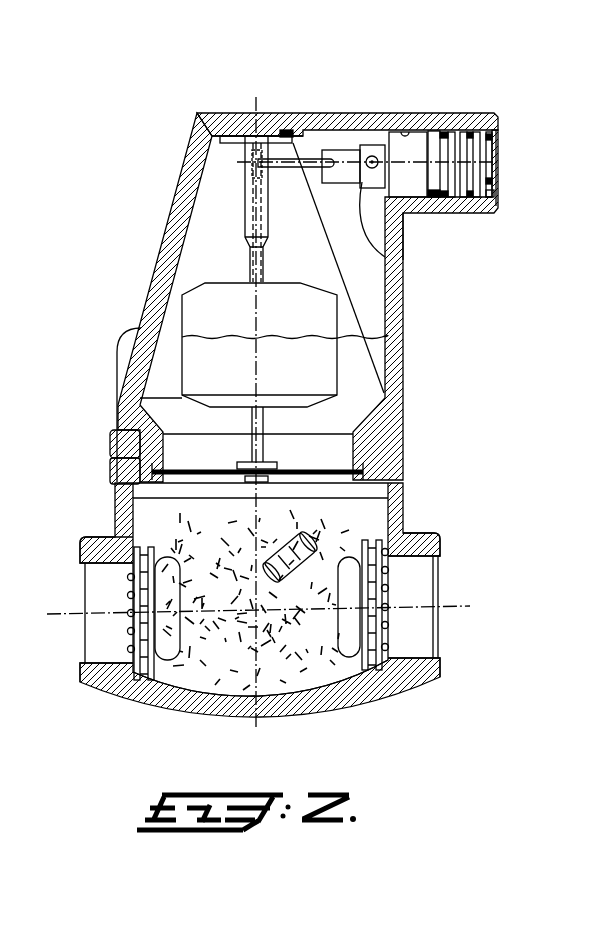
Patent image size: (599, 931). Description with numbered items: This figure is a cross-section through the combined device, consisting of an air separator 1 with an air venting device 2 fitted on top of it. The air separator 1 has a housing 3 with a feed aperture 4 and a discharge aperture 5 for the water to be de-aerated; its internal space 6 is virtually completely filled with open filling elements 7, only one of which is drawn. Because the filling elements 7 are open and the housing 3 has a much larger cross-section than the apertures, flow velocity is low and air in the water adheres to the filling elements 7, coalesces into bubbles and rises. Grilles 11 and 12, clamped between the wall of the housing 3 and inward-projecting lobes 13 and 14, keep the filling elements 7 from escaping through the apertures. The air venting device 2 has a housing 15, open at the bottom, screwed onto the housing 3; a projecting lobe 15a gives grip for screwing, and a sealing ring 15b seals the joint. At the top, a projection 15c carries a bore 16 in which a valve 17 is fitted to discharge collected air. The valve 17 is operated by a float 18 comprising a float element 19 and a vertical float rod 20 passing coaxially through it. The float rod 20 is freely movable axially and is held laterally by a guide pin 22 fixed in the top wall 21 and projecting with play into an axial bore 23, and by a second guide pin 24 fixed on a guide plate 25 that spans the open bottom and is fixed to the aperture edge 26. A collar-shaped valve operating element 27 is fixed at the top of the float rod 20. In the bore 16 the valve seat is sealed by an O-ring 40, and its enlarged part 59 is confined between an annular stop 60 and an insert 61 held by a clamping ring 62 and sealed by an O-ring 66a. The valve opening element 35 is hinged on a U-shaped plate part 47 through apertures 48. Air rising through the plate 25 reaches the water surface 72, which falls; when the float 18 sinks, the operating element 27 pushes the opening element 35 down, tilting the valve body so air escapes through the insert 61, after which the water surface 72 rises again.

The air separator 1 is at (477, 502).
The air venting device 2 is at (483, 301).
The housing 3 is at (155, 705).
The feed aperture 4 is at (100, 635).
The discharge aperture 5 is at (427, 633).
The internal space 6 is at (220, 690).
The filling elements 7 is at (307, 547).
The grille 11 is at (120, 695).
The grille 12 is at (392, 684).
The lobe 13 is at (153, 703).
The lobe 14 is at (345, 645).
The housing 15 is at (152, 262).
The projecting lobe 15a is at (123, 355).
The sealing ring 15b is at (113, 437).
The projection 15c is at (493, 113).
The bore 16 is at (431, 131).
The valve 17 is at (397, 143).
The float 18 is at (228, 280).
The float element 19 is at (210, 320).
The float rod 20 is at (243, 197).
The top wall 21 is at (227, 123).
The guide pin 22 is at (263, 136).
The axial bore 23 is at (247, 220).
The second guide pin 24 is at (263, 428).
The guide plate 25 is at (323, 467).
The aperture edge 26 is at (112, 473).
The valve operating element 27 is at (284, 137).
The valve opening element 35 is at (355, 112).
The O-ring 40 is at (470, 127).
The plate part 47 is at (401, 212).
The apertures 48 is at (383, 243).
The part with enlarged diameter 59 is at (435, 192).
The annular stop 60 is at (443, 127).
The insert 61 is at (497, 157).
The clamping ring 62 is at (500, 137).
The O-ring 66a is at (487, 197).
The water surface 72 is at (400, 339).